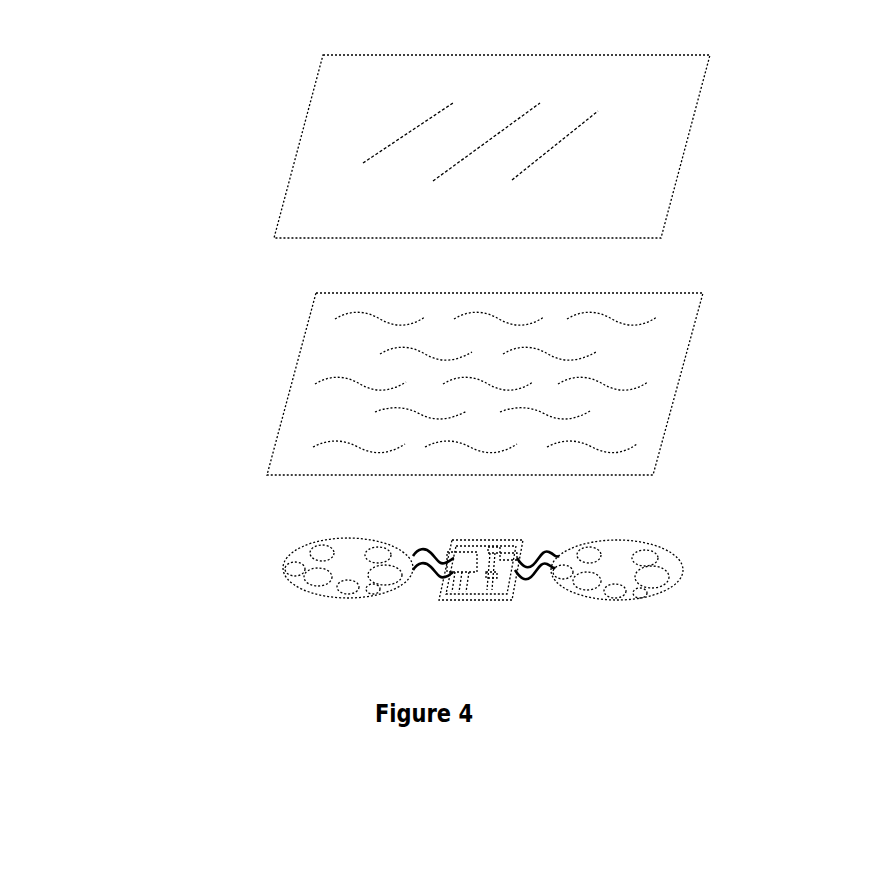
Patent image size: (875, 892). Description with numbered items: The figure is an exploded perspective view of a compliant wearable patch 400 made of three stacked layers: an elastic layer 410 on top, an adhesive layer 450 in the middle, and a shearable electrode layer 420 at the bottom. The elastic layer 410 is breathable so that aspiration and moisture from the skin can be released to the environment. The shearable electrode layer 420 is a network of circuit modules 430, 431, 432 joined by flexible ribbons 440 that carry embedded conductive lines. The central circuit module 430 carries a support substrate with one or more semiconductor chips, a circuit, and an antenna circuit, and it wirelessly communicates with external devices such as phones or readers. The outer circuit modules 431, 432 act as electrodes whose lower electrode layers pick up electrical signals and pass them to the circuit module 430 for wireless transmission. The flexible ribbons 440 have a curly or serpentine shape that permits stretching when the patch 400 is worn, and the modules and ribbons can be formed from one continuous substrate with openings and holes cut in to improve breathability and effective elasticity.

The compliant wearable patch 400 is at (127, 30).
The elastic layer 410 is at (675, 118).
The adhesive layer 450 is at (670, 354).
The shearable electrode layer 420 is at (770, 510).
The circuit module 430 is at (490, 545).
The circuit module 431 is at (300, 558).
The circuit module 432 is at (672, 567).
The flexible ribbon 440 is at (548, 550).